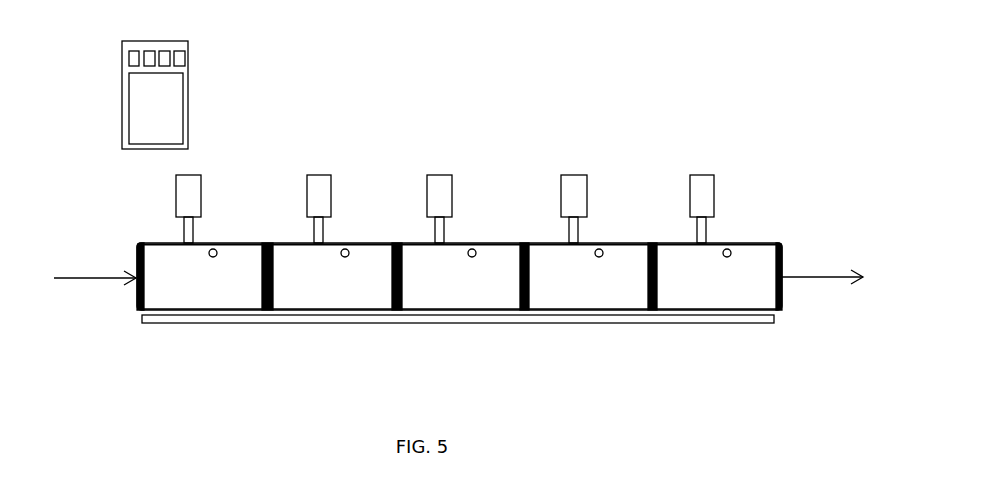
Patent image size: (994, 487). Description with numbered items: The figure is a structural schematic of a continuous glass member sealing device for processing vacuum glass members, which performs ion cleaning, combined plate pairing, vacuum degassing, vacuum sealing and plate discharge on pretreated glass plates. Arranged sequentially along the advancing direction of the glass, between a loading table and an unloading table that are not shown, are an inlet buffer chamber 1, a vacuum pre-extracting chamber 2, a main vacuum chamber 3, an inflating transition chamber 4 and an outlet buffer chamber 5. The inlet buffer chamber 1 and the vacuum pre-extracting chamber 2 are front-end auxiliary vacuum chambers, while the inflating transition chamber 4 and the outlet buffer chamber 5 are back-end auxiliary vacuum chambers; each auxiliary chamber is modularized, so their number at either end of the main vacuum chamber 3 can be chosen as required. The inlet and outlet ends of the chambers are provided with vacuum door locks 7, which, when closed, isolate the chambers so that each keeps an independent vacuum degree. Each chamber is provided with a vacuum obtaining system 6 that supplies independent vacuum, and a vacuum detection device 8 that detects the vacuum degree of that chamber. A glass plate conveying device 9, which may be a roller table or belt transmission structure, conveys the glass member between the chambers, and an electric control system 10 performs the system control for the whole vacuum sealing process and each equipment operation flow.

The inlet buffer chamber 1 is at (203, 276).
The vacuum pre-extracting chamber 2 is at (332, 276).
The main vacuum chamber 3 is at (461, 276).
The inflating transition chamber 4 is at (588, 276).
The outlet buffer chamber 5 is at (716, 276).
The vacuum obtaining system 6 is at (698, 185).
The vacuum door lock 7 is at (777, 283).
The vacuum detection device 8 is at (729, 250).
The glass plate conveying device 9 is at (670, 318).
The electric control system 10 is at (159, 113).